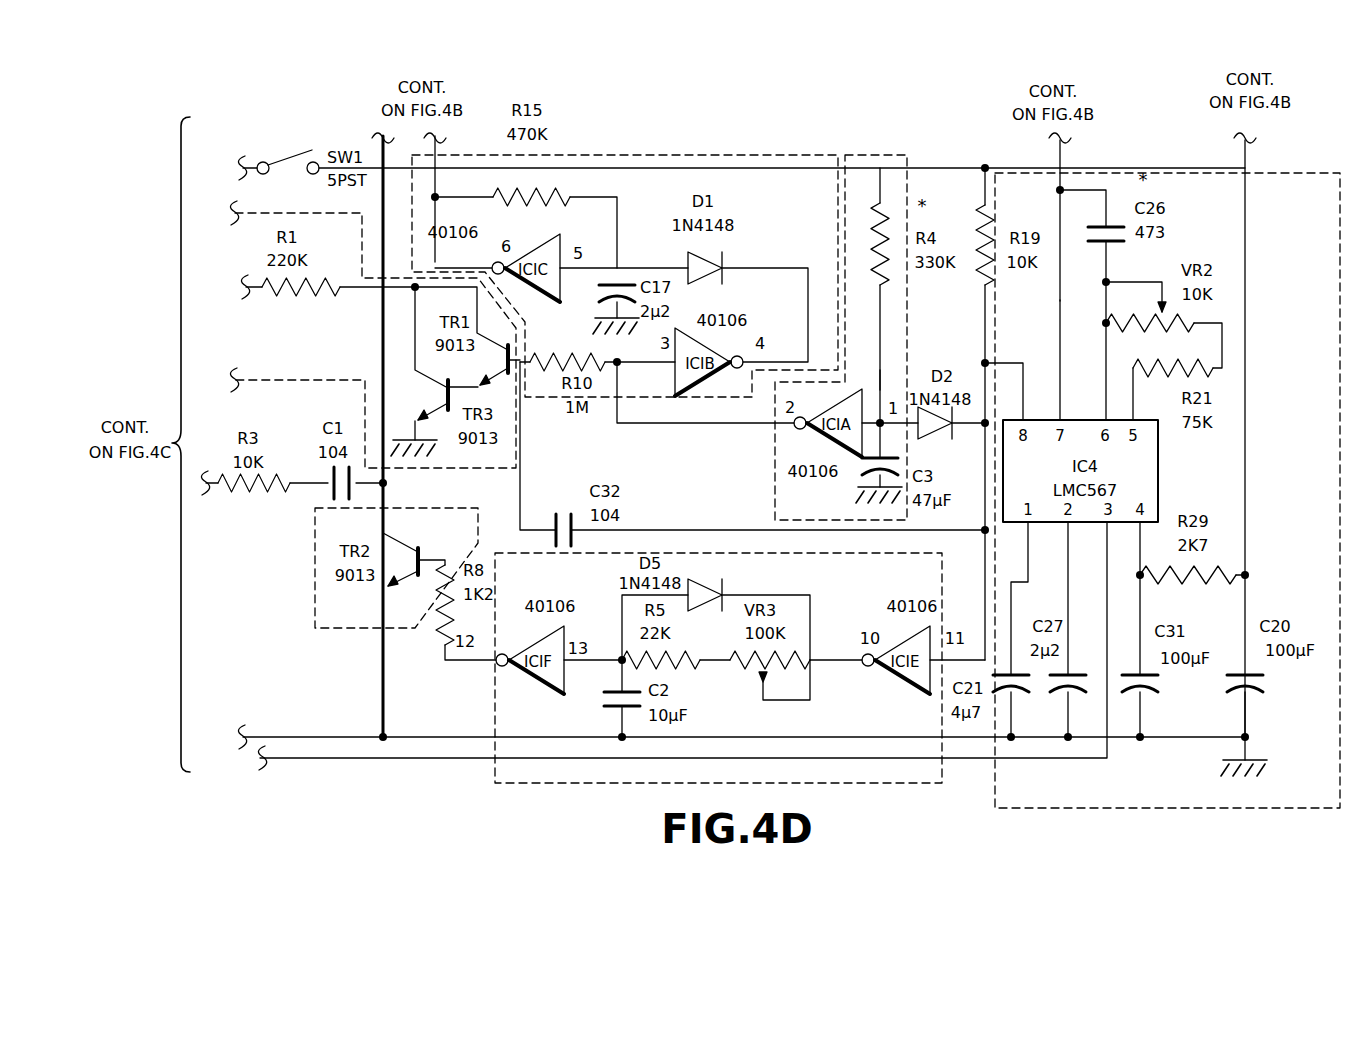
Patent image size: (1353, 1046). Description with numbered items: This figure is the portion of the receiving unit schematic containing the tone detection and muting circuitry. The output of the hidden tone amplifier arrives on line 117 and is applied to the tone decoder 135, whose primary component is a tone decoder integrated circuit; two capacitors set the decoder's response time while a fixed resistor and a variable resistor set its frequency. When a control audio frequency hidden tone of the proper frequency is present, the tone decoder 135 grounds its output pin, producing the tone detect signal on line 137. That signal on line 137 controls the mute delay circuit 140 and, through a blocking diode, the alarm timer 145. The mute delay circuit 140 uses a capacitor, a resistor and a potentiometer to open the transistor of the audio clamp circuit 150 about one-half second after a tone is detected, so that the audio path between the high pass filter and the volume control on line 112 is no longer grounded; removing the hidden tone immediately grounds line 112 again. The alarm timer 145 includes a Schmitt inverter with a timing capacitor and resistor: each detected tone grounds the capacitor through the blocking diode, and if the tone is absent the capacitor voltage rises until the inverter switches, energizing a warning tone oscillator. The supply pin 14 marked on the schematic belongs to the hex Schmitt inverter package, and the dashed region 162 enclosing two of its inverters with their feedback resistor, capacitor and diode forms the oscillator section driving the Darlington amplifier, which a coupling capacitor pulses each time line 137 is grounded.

The oscillator circuit 162 is at (650, 155).
The alarm timer 145 is at (873, 155).
The line 112 is at (382, 347).
The audio clamp circuit 150 is at (328, 575).
The line 117 is at (320, 760).
The mute delay circuit 140 is at (885, 783).
The tone decoder 135 is at (1152, 790).
The line 137 is at (1060, 300).
The supply pin 14 is at (868, 373).